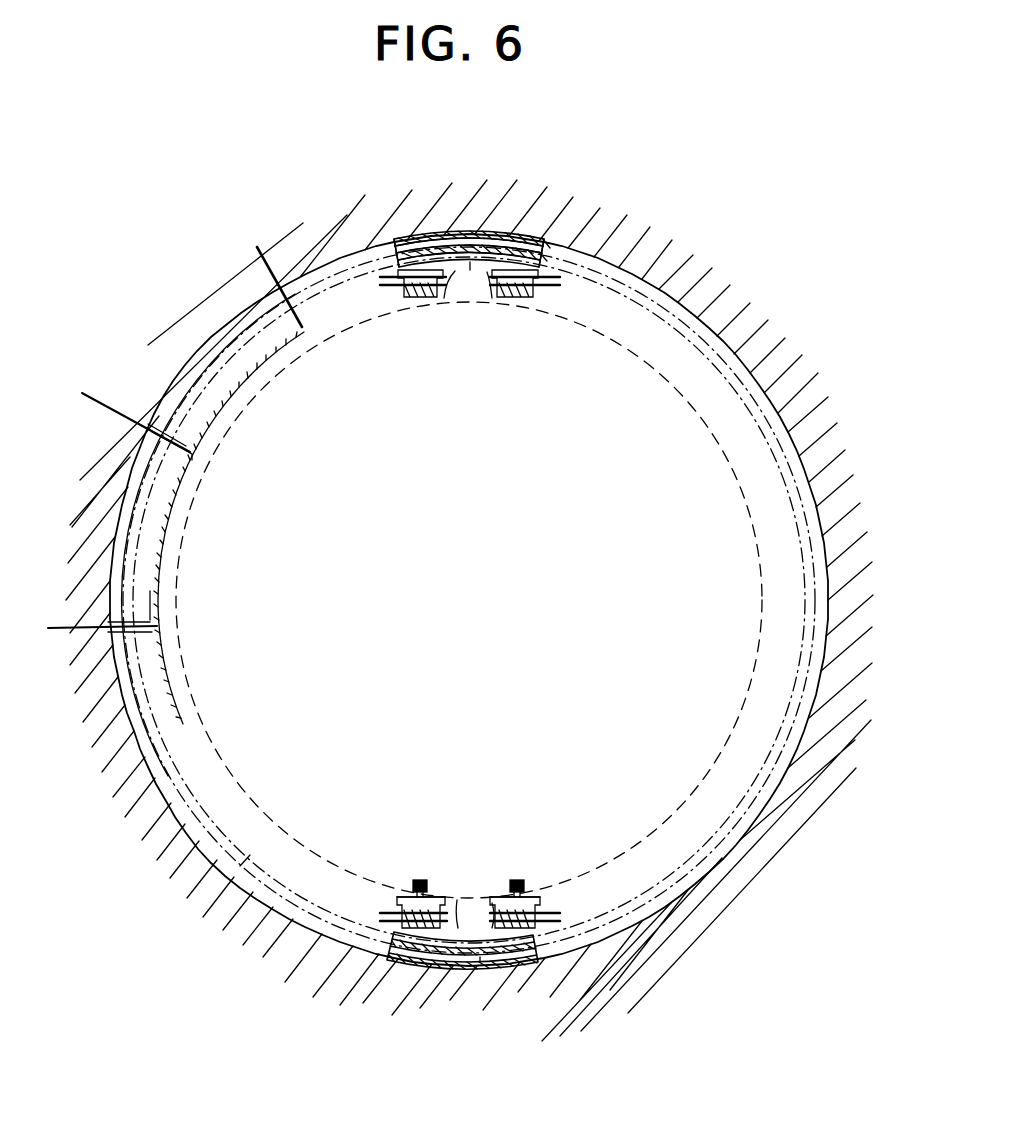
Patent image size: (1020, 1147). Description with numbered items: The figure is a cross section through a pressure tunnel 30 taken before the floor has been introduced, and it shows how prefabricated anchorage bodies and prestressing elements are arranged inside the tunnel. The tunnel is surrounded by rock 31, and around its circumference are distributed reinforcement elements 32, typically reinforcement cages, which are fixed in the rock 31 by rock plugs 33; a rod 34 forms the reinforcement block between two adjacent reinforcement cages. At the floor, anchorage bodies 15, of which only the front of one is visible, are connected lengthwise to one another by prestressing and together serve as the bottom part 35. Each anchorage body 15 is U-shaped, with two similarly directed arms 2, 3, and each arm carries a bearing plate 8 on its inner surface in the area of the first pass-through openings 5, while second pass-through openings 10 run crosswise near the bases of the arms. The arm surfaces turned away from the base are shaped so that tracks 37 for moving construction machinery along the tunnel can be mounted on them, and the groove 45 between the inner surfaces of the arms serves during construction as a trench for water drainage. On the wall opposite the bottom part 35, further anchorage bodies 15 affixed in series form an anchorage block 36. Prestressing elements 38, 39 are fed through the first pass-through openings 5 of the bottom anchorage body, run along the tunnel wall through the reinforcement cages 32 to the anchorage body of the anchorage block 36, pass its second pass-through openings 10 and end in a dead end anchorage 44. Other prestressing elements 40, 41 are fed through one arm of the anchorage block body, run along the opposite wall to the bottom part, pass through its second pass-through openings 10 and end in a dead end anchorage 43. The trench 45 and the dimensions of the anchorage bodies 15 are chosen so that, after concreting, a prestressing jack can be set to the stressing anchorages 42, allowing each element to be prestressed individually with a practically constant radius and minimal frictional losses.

The arm 2 is at (407, 900).
The arm 3 is at (570, 909).
The first pass-through openings 5 is at (418, 298).
The bearing plate 8 is at (444, 298).
The second pass-through openings 10 is at (407, 244).
The anchorage bodies 15 is at (470, 270).
The pressure tunnel 30 is at (193, 348).
The rock 31 is at (222, 305).
The reinforcement elements 32 is at (249, 376).
The rock plugs 33 is at (103, 405).
The rod 34 is at (150, 598).
The bottom part 35 is at (508, 975).
The anchorage block 36 is at (481, 220).
The tracks 37 is at (417, 880).
The prestressing element 38 is at (460, 243).
The prestressing element 39 is at (503, 243).
The prestressing element 40 is at (618, 264).
The prestressing element 41 is at (664, 300).
The stressing anchorages 42 is at (487, 272).
The dead end anchorage 43 is at (252, 853).
The dead end anchorage 44 is at (545, 250).
The groove 45 is at (397, 244).